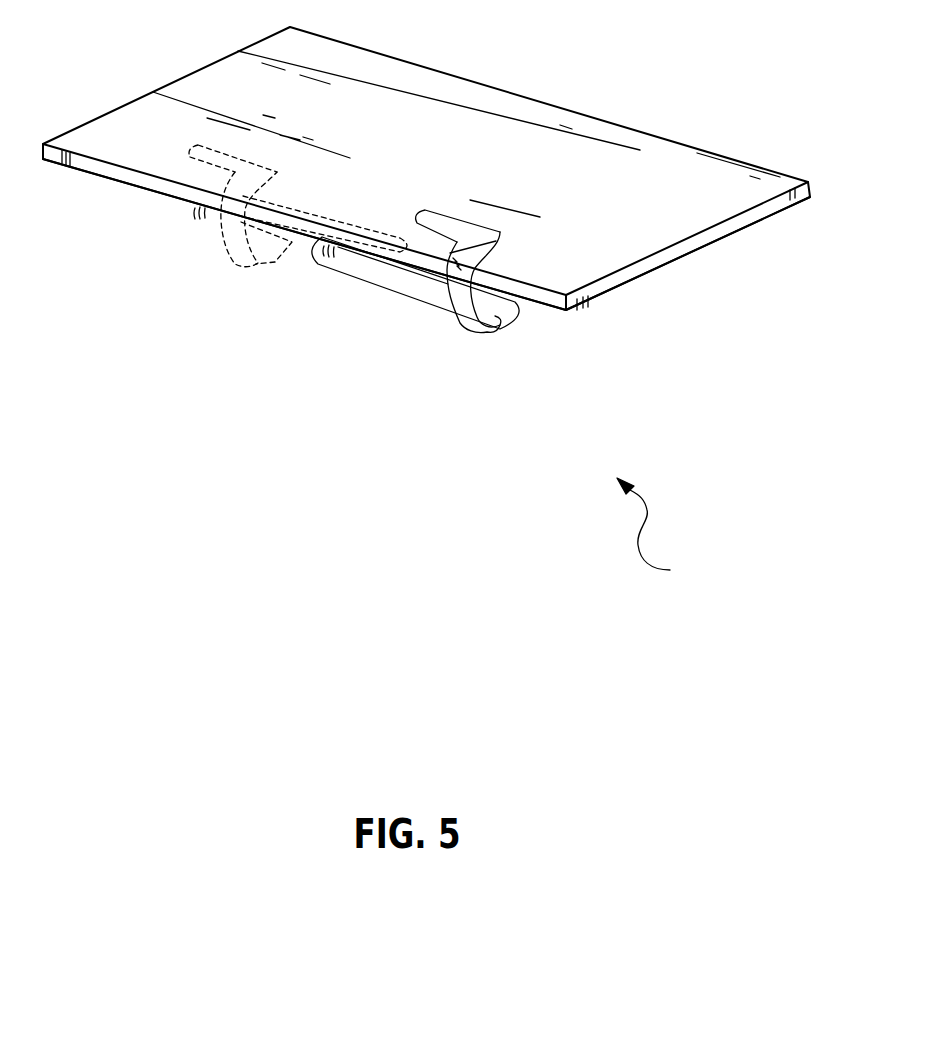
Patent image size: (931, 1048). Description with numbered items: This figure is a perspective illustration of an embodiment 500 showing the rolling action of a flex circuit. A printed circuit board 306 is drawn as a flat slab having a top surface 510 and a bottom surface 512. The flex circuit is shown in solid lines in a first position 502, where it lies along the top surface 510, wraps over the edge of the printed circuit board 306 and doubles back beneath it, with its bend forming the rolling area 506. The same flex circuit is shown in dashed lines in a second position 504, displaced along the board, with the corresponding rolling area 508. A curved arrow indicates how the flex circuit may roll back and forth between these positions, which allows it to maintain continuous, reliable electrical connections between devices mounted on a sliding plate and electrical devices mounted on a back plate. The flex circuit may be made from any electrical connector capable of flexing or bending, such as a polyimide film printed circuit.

The printed circuit board 306 is at (640, 273).
The embodiment 500 is at (700, 550).
The first position 502 is at (463, 314).
The second position 504 is at (233, 247).
The rolling area 506 is at (330, 266).
The rolling area 508 is at (188, 216).
The top surface 510 is at (527, 127).
The bottom surface 512 is at (714, 245).